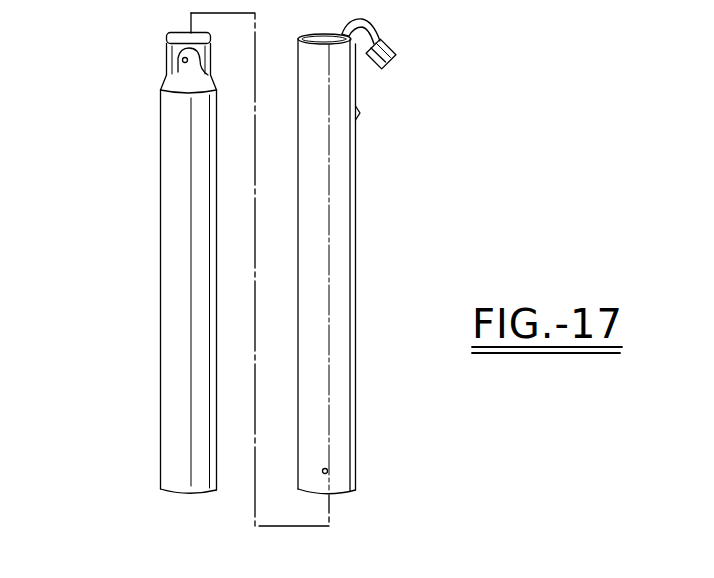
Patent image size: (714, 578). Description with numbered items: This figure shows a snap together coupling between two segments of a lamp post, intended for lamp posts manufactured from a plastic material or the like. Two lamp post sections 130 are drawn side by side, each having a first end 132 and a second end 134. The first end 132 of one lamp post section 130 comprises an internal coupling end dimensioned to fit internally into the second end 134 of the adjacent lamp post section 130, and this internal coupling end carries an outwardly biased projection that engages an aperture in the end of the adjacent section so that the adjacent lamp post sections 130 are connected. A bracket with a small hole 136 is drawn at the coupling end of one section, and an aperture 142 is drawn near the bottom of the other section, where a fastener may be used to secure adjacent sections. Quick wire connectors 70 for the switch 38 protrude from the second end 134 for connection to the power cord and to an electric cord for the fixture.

The lamp post section 130 is at (160, 203).
The first end 132 is at (160, 490).
The second end 134 is at (174, 33).
The bracket with hole 136 is at (182, 60).
The switch 38 is at (361, 116).
The quick wire connectors 70 is at (397, 50).
The aperture 142 is at (328, 468).